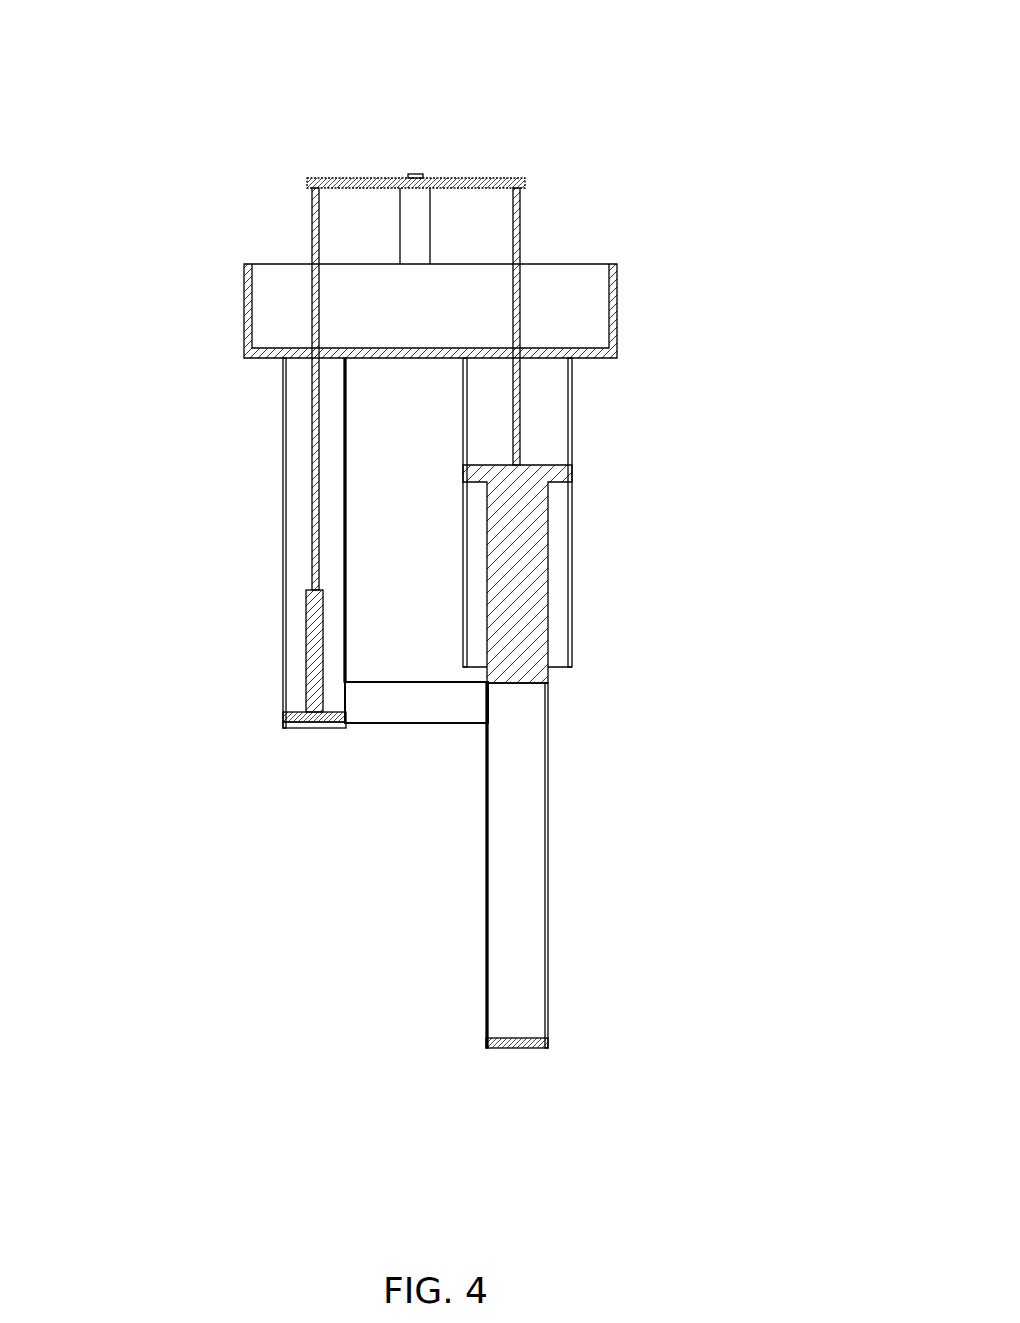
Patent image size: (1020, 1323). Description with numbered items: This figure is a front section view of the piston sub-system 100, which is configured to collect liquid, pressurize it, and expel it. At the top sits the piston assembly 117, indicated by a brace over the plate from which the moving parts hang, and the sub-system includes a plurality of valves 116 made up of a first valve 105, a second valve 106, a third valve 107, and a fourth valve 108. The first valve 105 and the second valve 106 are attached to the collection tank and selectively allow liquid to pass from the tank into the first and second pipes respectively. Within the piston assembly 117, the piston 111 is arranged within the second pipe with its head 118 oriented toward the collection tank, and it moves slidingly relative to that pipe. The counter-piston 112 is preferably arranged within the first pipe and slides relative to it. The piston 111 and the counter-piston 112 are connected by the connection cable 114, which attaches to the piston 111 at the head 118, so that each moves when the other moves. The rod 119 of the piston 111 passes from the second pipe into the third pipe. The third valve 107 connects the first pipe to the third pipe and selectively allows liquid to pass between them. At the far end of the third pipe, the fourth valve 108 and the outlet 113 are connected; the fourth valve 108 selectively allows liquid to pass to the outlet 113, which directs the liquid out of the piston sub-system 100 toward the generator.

The piston sub-system 100 is at (488, 97).
The first valve 105 is at (312, 348).
The second valve 106 is at (523, 347).
The third valve 107 is at (425, 705).
The fourth valve 108 is at (533, 1047).
The piston 111 is at (548, 552).
The counter-piston 112 is at (307, 657).
The outlet 113 is at (512, 1047).
The connection cable 114 is at (313, 510).
The plurality of valves 116 is at (429, 478).
The piston assembly 117 is at (523, 158).
The head 118 is at (572, 478).
The rod 119 is at (513, 683).